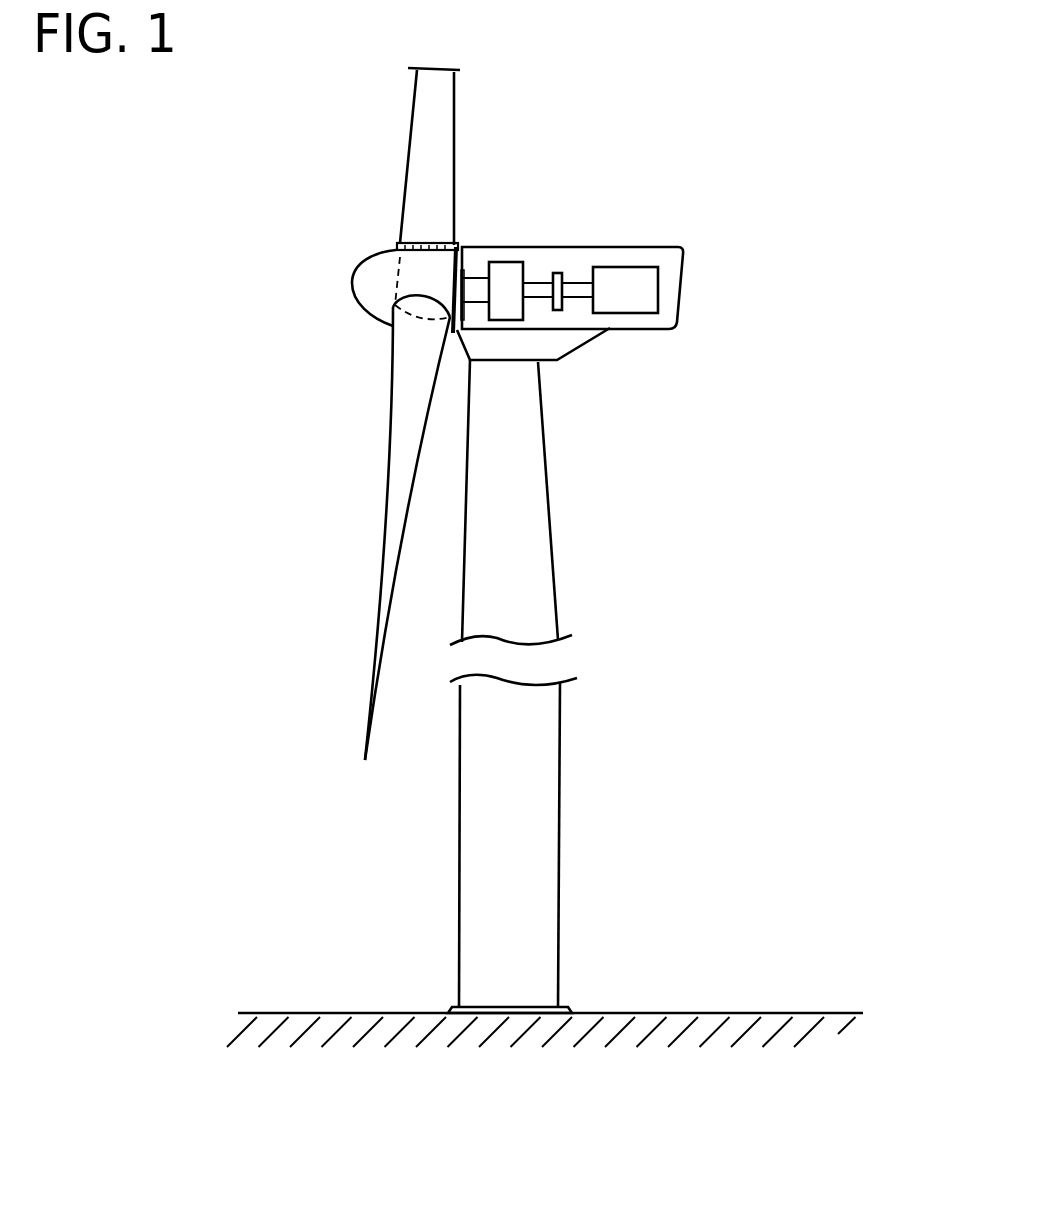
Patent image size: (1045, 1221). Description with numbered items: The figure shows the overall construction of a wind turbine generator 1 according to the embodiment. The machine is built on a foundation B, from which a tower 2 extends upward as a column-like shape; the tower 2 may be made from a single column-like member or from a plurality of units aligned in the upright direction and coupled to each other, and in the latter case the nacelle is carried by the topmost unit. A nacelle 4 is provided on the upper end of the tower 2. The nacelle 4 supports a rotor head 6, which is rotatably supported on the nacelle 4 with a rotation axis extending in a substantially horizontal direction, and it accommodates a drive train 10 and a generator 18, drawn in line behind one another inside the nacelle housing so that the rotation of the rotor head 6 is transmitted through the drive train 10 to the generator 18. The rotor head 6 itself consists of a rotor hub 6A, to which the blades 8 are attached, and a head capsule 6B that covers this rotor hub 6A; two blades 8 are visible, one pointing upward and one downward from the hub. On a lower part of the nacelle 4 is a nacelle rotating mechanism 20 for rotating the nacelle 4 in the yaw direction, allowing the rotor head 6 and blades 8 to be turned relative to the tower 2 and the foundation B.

The wind turbine generator 1 is at (693, 150).
The tower 2 is at (560, 798).
The nacelle 4 is at (693, 287).
The rotor head 6 is at (327, 288).
The rotor hub 6A is at (412, 278).
The head capsule 6B is at (363, 308).
The blade 8 is at (408, 142).
The drive train 10 is at (538, 276).
The generator 18 is at (627, 283).
The nacelle rotating mechanism 20 is at (565, 342).
The foundation B is at (450, 1008).